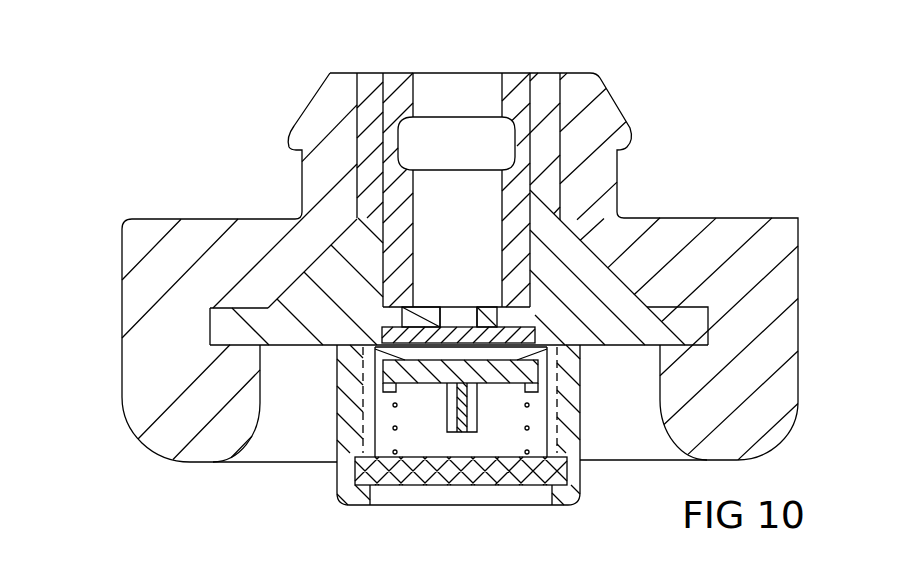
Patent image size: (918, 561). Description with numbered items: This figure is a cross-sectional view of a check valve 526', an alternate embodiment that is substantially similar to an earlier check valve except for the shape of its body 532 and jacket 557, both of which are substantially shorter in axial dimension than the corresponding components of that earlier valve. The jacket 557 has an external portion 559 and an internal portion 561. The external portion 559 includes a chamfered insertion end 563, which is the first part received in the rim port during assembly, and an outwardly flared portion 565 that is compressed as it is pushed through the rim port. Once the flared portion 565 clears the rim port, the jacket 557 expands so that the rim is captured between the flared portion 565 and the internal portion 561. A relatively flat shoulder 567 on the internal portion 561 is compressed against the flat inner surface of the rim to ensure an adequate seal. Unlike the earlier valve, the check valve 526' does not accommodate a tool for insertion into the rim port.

The check valve 526' is at (593, 190).
The body 532 is at (615, 240).
The jacket 557 is at (731, 207).
The external portion 559 is at (272, 75).
The internal portion 561 is at (98, 223).
The chamfered insertion end 563 is at (583, 73).
The outwardly flared portion 565 is at (604, 109).
The shoulder 567 is at (184, 218).